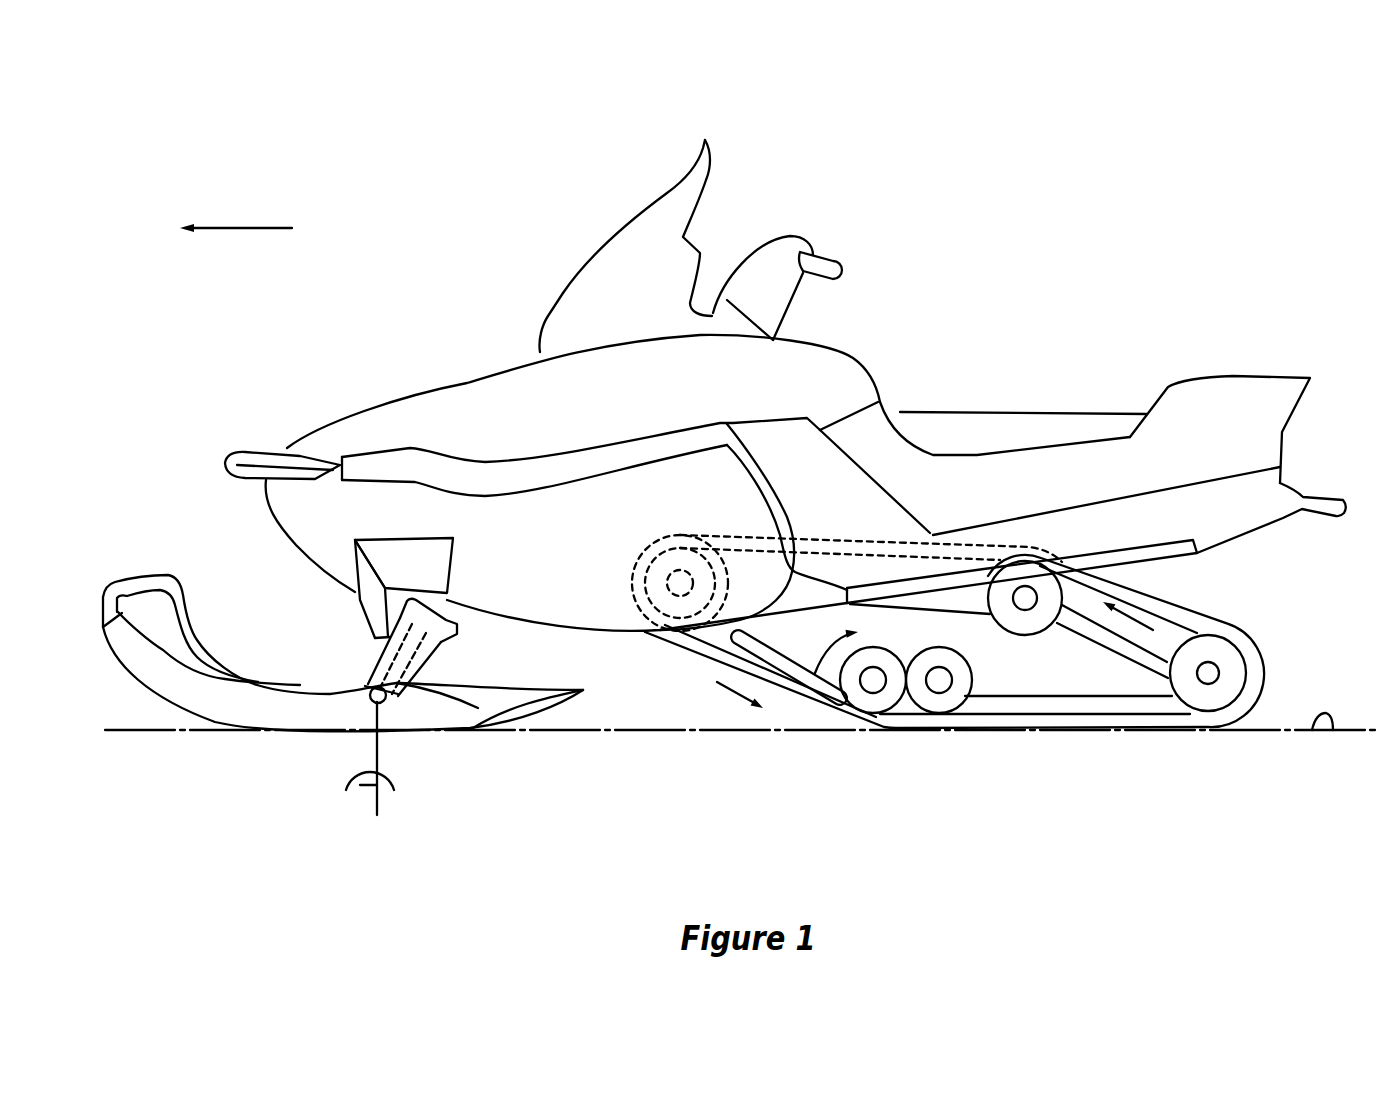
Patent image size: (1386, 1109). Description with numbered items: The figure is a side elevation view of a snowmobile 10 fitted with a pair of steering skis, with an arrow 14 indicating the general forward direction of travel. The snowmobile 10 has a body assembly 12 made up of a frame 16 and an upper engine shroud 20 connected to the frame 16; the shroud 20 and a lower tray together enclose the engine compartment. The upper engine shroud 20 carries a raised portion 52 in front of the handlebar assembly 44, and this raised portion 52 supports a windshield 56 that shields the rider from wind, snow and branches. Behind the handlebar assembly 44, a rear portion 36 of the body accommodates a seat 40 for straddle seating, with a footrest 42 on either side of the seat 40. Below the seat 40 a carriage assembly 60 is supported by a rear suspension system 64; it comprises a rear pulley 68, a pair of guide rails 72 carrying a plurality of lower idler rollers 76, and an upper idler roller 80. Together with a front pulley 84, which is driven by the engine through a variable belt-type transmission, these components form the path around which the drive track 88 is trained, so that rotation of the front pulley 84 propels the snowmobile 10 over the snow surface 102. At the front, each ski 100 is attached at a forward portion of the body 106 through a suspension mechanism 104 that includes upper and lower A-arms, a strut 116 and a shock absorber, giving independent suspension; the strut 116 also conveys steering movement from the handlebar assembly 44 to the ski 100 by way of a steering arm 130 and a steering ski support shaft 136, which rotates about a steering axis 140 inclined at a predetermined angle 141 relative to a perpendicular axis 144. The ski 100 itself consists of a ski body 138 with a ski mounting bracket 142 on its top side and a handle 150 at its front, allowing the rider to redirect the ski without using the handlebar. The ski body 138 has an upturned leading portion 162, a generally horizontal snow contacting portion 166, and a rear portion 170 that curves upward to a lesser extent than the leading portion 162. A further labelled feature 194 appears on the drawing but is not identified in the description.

The snowmobile 10 is at (1172, 244).
The body assembly 12 is at (469, 365).
The arrow 14 is at (250, 226).
The frame 16 is at (1126, 545).
The upper engine shroud 20 is at (432, 418).
The rear portion 36 is at (1187, 420).
The seat 40 is at (1027, 412).
The footrest 42 is at (1000, 520).
The handlebar assembly 44 is at (836, 265).
The raised portion 52 is at (563, 296).
The windshield 56 is at (665, 222).
The carriage assembly 60 is at (1206, 609).
The rear suspension system 64 is at (806, 718).
The rear pulley 68 is at (1215, 700).
The guide rails 72 is at (833, 692).
The lower idler rollers 76 is at (938, 714).
The upper idler roller 80 is at (1035, 620).
The front pulley 84 is at (712, 600).
The drive track 88 is at (1082, 735).
The front ski 100 is at (157, 697).
The snow surface 102 is at (1333, 735).
The suspension mechanism 104 is at (348, 660).
The forward portion of the body 106 is at (462, 575).
The strut 116 is at (420, 652).
The steering arm 130 is at (462, 625).
The steering ski support shaft 136 is at (413, 690).
The ski body 138 is at (222, 705).
The steering axis 140 is at (374, 702).
The predetermined angle 141 is at (360, 785).
The ski mounting bracket 142 is at (403, 697).
The perpendicular axis 144 is at (381, 772).
The handle 150 is at (160, 575).
The upturned leading portion 162 is at (132, 650).
The snow contacting portion 166 is at (362, 698).
The rear portion 170 is at (550, 707).
The ski turning direction 194 is at (331, 744).